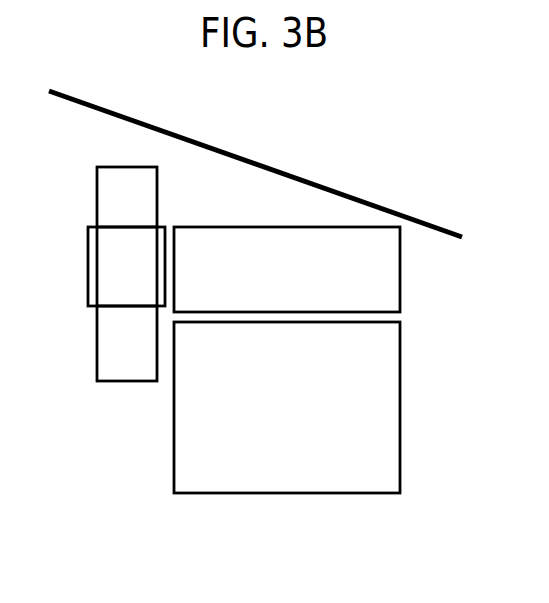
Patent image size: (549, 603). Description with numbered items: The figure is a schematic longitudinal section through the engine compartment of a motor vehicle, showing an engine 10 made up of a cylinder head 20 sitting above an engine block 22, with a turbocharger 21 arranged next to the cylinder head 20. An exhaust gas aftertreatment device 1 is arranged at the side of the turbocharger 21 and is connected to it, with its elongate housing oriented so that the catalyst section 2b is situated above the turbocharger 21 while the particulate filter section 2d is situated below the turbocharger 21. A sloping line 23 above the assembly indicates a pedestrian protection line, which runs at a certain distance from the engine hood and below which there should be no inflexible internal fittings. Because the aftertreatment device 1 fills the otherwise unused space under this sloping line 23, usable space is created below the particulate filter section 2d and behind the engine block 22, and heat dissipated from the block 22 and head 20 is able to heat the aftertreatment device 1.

The exhaust gas aftertreatment device 1 is at (80, 337).
The catalyst section 2b is at (97, 191).
The particulate filter section 2d is at (97, 355).
The engine 10 is at (308, 534).
The cylinder head 20 is at (400, 270).
The turbocharger 21 is at (88, 270).
The engine block 22 is at (401, 395).
The pedestrian protection line 23 is at (302, 178).